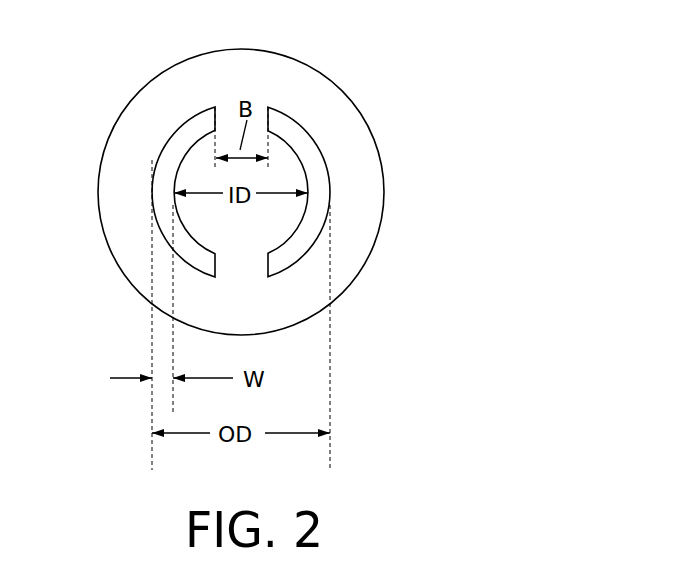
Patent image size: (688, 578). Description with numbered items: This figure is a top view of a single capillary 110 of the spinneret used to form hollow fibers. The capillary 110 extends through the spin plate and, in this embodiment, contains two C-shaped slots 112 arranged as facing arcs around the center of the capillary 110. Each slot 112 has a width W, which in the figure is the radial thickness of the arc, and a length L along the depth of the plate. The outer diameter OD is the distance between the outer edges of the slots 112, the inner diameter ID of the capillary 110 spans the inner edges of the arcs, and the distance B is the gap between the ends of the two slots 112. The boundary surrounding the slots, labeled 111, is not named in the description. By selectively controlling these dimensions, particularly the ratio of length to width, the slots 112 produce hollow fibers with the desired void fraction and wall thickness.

The capillary 110 is at (297, 192).
The outer ring body 111 is at (347, 287).
The C-shaped slot 112 is at (183, 135).